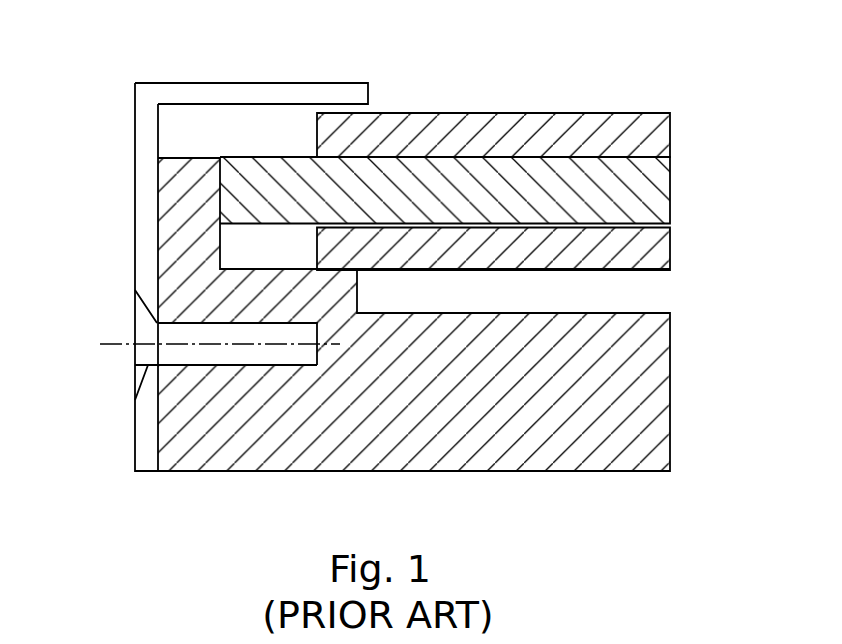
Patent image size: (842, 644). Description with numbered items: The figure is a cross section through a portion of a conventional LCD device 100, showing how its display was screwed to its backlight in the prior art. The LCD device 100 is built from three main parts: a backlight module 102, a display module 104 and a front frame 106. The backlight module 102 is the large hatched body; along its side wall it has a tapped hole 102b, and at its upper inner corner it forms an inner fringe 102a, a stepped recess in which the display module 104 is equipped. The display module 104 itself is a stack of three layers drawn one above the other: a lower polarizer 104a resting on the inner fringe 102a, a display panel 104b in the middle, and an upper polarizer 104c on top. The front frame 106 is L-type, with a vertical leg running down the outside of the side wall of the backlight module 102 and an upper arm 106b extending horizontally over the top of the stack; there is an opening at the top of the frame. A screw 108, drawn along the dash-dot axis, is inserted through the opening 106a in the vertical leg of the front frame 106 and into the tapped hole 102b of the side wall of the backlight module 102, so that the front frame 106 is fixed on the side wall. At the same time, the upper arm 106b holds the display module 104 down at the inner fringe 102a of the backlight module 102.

The LCD device 100 is at (145, 54).
The backlight module 102 is at (442, 280).
The inner fringe of the backlight module 102a is at (262, 268).
The tapped hole 102b is at (235, 365).
The display module 104 is at (526, 195).
The lower polarizer 104a is at (539, 250).
The display panel 104b is at (638, 195).
The upper polarizer 104c is at (638, 133).
The front frame 106 is at (244, 257).
The opening 106a is at (147, 297).
The upper arm 106b is at (337, 92).
The screw 108 is at (133, 365).